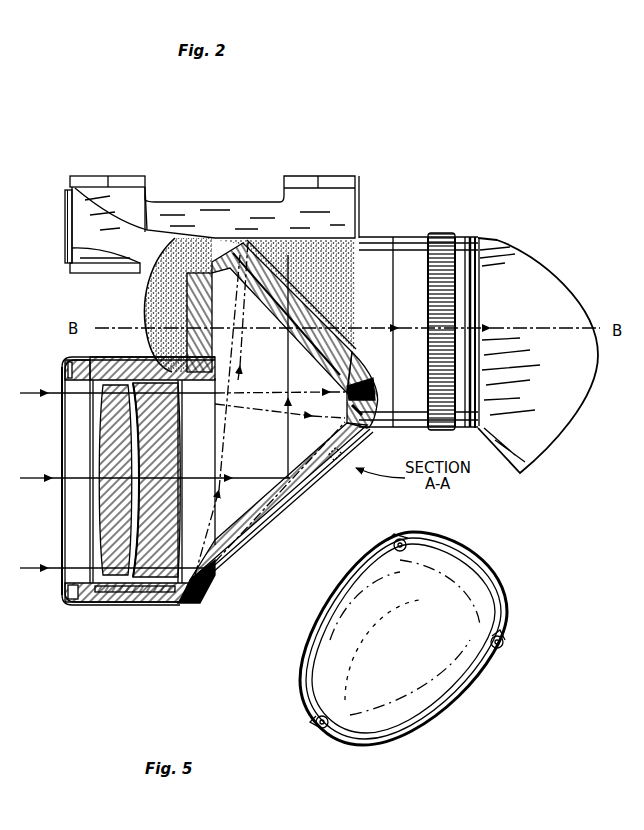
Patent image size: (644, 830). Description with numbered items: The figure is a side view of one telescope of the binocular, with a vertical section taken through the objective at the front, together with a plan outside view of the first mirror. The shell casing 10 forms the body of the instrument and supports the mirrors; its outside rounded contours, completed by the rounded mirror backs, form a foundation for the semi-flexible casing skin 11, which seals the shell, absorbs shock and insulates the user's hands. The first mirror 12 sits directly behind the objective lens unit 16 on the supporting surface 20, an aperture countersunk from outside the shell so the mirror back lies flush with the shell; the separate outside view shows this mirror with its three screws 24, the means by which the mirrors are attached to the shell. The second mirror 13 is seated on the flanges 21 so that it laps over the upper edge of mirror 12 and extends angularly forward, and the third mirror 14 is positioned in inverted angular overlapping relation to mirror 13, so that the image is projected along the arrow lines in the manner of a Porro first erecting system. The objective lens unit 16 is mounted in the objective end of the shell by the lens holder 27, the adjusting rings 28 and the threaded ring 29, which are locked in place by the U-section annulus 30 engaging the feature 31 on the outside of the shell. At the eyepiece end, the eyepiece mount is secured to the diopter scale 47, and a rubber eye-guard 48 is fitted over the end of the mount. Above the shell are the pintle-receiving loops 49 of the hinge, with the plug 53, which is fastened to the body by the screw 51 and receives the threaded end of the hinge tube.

In FIG. 2, the shell casing 10 is at (163, 612).
In FIG. 2, the casing skin 11 is at (268, 552).
In FIG. 2, the first mirror 12 is at (318, 498).
In FIG. 5, the first mirror 12 is at (462, 688).
In FIG. 2, the second mirror 13 is at (277, 294).
In FIG. 2, the third mirror 14 is at (234, 345).
In FIG. 2, the objective lens unit 16 is at (110, 632).
In FIG. 2, the supporting surface 20 is at (364, 428).
In FIG. 2, the flanges 21 is at (232, 250).
In FIG. 2, the screws 24 is at (356, 452).
In FIG. 5, the screws 24 is at (398, 538).
In FIG. 2, the lens holder 27 is at (150, 607).
In FIG. 2, the adjusting rings 28 is at (78, 607).
In FIG. 2, the threaded ring 29 is at (62, 592).
In FIG. 2, the U-section annulus 30 is at (62, 375).
In FIG. 2, the engagement on outside of shell 31 is at (104, 607).
In FIG. 2, the diopter scale 47 is at (441, 233).
In FIG. 2, the rubber eye-guard 48 is at (530, 282).
In FIG. 2, the pintle-receiving loops 49 is at (122, 176).
In FIG. 2, the screw 51 is at (65, 220).
In FIG. 2, the plug 53 is at (360, 216).